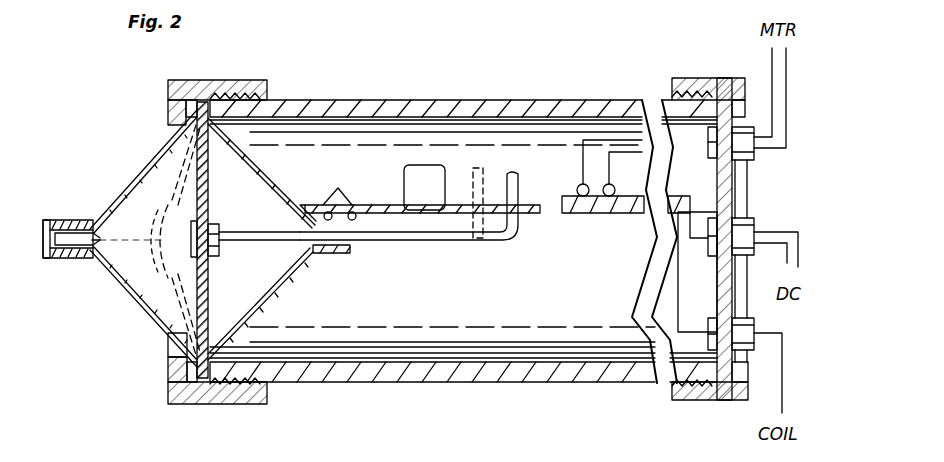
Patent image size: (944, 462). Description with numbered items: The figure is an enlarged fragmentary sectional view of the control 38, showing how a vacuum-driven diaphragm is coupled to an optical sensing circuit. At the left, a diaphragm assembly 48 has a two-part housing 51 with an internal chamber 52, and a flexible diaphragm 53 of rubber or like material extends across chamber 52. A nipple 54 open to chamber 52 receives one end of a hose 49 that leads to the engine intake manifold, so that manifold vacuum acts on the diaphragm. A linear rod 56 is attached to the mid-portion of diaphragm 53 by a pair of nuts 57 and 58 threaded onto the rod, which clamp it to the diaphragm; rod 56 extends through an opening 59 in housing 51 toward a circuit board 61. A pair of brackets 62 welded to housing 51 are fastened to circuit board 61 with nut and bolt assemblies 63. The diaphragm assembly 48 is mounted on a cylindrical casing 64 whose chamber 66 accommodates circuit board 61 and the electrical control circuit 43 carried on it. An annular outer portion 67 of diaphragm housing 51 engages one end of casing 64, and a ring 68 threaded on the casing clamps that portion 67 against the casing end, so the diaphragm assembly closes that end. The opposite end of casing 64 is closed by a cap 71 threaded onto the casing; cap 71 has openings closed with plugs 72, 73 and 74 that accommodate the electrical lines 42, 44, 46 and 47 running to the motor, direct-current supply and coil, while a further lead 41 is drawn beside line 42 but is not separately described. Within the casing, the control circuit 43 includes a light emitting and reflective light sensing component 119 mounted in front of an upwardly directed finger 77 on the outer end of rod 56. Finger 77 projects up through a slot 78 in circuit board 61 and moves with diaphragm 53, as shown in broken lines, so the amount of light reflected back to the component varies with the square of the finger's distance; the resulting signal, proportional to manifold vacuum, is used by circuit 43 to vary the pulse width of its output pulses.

The control 38 is at (398, 100).
The DC lead 41 is at (790, 230).
The electrical line 42 is at (766, 230).
The electrical control circuit 43 is at (568, 184).
The electrical line 44 is at (786, 348).
The electrical line 46 is at (770, 68).
The electrical line 47 is at (788, 98).
The diaphragm assembly 48 is at (135, 163).
The hose 49 is at (50, 262).
The two-part housing 51 is at (123, 191).
The internal chamber 52 is at (130, 241).
The flexible diaphragm 53 is at (222, 296).
The nipple 54 is at (80, 262).
The linear rod 56 is at (254, 228).
The nut 57 is at (192, 258).
The nut 58 is at (219, 254).
The opening 59 is at (332, 253).
The circuit board 61 is at (610, 214).
The brackets 62 is at (292, 190).
The nut and bolt assemblies 63 is at (332, 200).
The cylindrical casing 64 is at (445, 100).
The chamber 66 is at (472, 122).
The annular outer portion 67 is at (197, 100).
The ring 68 is at (222, 404).
The cap 71 is at (718, 404).
The plug 72 is at (708, 128).
The plug 73 is at (710, 210).
The plug 74 is at (714, 326).
The finger 77 is at (480, 168).
The slot 78 is at (528, 215).
The light emitting and reflective light sensing component 119 is at (416, 165).